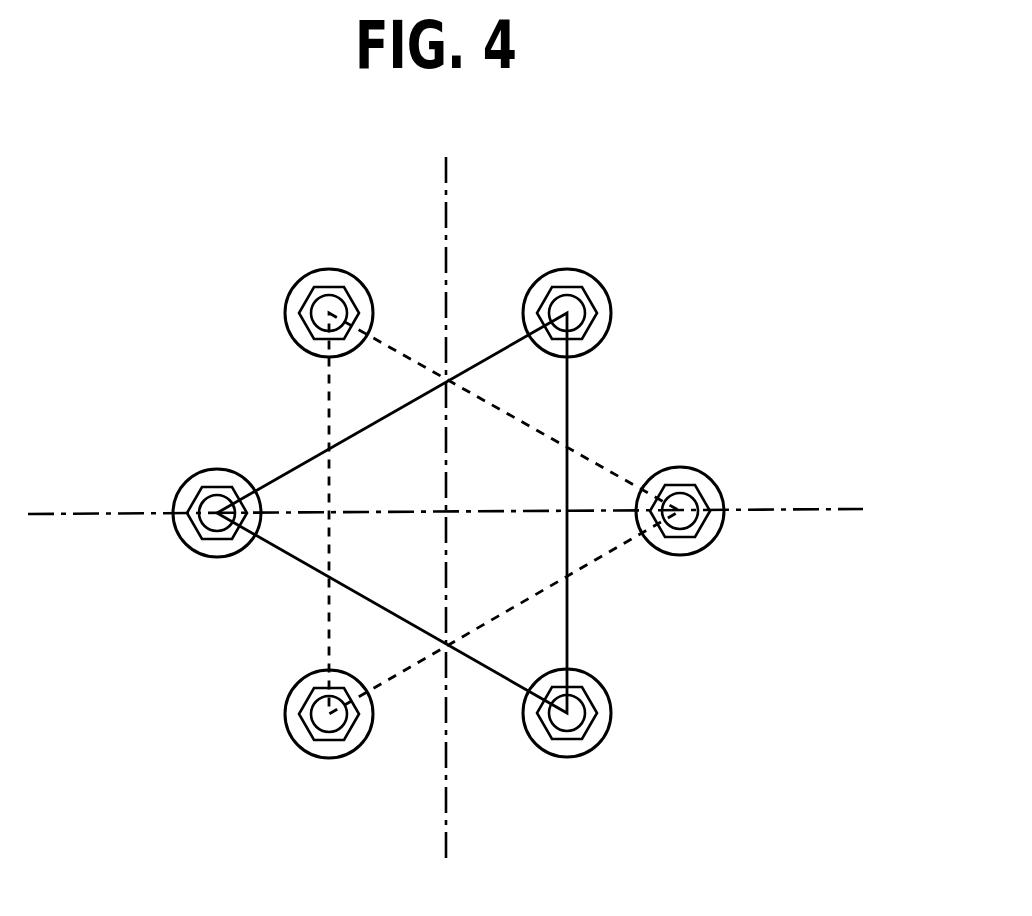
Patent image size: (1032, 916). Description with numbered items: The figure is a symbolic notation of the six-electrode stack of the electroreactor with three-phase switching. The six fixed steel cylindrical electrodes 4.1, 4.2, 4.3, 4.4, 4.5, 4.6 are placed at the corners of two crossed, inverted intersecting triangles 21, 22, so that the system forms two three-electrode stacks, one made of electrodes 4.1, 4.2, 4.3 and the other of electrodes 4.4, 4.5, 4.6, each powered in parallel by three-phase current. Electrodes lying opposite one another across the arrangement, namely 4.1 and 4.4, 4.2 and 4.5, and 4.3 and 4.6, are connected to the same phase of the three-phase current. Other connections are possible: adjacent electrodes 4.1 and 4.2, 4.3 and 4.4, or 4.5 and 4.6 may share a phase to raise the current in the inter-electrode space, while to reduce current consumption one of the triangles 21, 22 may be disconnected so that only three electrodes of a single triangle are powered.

The steel cylindrical electrode 4.1 is at (575, 720).
The steel cylindrical electrode 4.2 is at (188, 528).
The steel cylindrical electrode 4.3 is at (566, 290).
The steel cylindrical electrode 4.4 is at (327, 292).
The steel cylindrical electrode 4.5 is at (688, 520).
The steel cylindrical electrode 4.6 is at (325, 720).
The triangle 21 is at (347, 394).
The triangle 22 is at (546, 381).